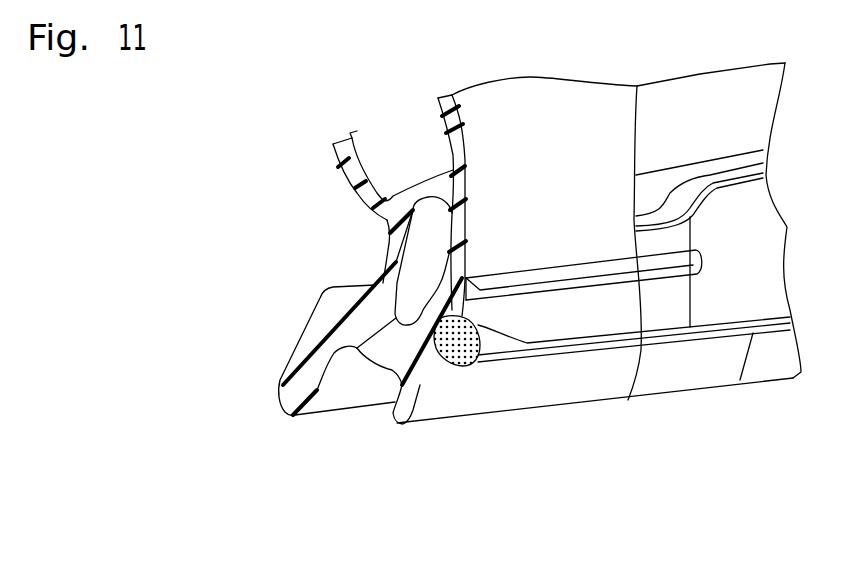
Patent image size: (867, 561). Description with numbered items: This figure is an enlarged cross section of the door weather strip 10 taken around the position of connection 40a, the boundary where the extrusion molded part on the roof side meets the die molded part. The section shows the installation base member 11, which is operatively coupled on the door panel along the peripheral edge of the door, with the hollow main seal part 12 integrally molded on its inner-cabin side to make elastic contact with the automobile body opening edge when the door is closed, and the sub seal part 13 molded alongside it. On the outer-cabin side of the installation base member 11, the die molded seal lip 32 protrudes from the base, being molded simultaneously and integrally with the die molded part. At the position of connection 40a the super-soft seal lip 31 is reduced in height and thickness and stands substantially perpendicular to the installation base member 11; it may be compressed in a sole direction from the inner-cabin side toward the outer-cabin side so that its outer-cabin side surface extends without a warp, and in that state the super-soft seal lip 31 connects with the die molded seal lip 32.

The door weather strip 10 is at (301, 240).
The installation base member 11 is at (418, 350).
The main seal part 12 is at (344, 175).
The sub seal part 13 is at (292, 364).
The super-soft seal lip 31 is at (450, 363).
The die molded seal lip 32 is at (660, 340).
The position of connection 40a is at (628, 400).